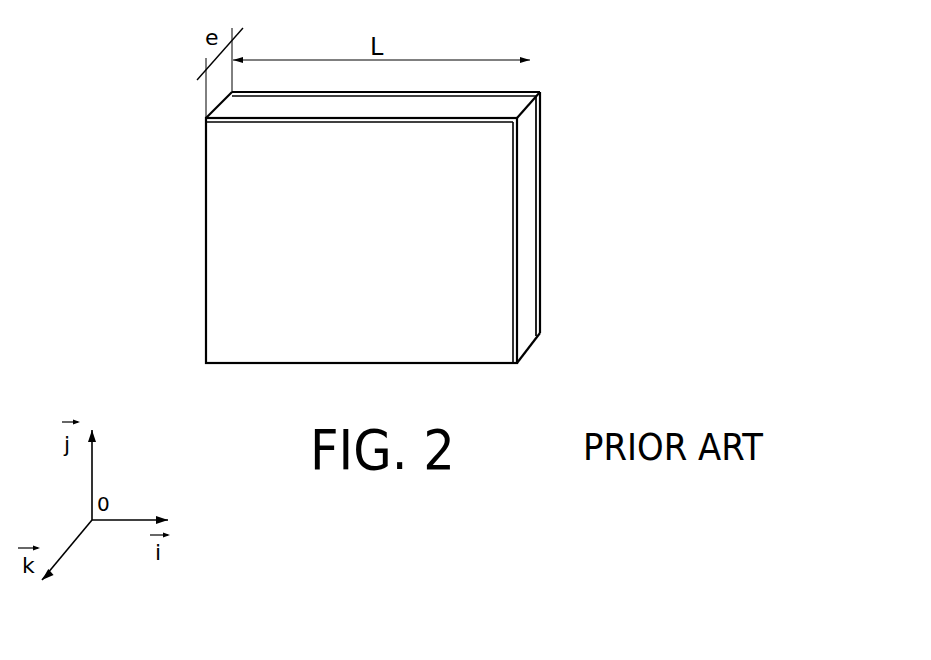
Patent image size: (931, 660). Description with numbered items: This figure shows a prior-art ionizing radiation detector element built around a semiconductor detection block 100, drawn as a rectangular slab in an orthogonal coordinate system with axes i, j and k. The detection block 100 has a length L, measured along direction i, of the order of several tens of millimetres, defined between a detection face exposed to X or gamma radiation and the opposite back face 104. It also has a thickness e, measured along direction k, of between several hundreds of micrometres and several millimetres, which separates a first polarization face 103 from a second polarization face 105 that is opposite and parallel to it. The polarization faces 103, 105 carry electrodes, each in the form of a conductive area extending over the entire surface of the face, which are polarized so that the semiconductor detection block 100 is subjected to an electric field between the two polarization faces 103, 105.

The detection block 100 is at (359, 195).
The first polarization face 103 is at (562, 158).
The back face 104 is at (527, 222).
The second polarization face 105 is at (508, 262).